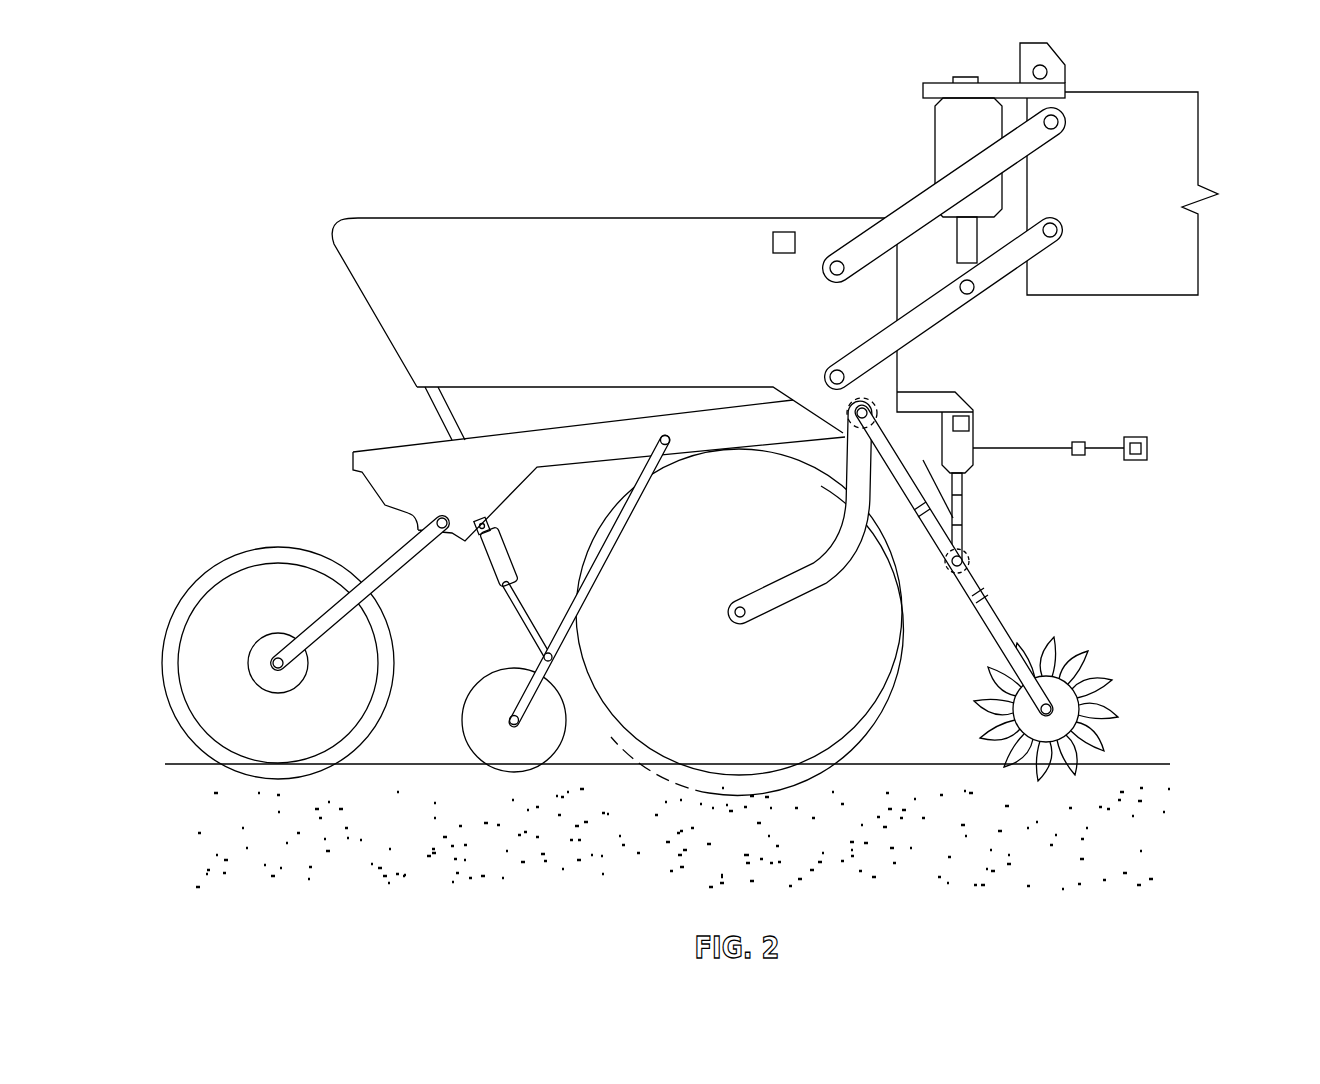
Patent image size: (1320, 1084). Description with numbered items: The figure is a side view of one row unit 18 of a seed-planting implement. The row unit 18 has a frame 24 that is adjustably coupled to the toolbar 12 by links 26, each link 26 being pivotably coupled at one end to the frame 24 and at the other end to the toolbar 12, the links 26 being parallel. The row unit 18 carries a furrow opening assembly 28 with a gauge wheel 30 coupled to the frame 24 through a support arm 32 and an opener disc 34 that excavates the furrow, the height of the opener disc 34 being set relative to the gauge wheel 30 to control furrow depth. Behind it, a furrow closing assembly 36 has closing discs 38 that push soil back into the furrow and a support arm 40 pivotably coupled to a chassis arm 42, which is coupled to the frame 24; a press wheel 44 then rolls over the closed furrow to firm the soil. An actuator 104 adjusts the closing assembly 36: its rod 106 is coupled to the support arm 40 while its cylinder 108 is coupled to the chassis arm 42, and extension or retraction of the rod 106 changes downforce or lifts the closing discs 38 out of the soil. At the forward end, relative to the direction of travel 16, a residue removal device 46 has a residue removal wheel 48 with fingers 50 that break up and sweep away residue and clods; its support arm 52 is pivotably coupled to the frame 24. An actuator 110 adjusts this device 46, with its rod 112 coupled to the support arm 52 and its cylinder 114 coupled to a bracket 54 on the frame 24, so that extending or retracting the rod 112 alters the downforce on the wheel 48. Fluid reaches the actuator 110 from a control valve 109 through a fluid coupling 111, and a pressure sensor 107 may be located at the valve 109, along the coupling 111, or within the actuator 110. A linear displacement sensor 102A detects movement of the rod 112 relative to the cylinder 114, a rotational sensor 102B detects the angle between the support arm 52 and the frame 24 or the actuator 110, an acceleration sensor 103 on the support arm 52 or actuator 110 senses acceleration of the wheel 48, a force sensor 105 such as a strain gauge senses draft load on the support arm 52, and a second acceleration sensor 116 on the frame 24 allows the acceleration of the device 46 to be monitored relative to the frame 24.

The toolbar 12 is at (1090, 296).
The direction of travel 16 is at (1183, 447).
The row unit 18 is at (428, 141).
The frame 24 is at (636, 218).
The links 26 is at (1035, 228).
The furrow opening assembly 28 is at (918, 688).
The gauge wheel 30 is at (686, 671).
The support arm 32 is at (787, 603).
The opener disc 34 is at (672, 786).
The furrow closing assembly 36 is at (440, 715).
The closing discs 38 is at (468, 752).
The support arm 40 is at (572, 643).
The chassis arm 42 is at (388, 452).
The press wheel 44 is at (162, 657).
The residue removal device 46 is at (1013, 548).
The residue removal wheel 48 is at (1068, 721).
The fingers 50 is at (1094, 665).
The support arm 52 is at (992, 614).
The bracket 54 is at (945, 392).
The linear displacement sensor 102A is at (1060, 485).
The rotational sensor 102B is at (878, 400).
The acceleration sensor 103 is at (937, 532).
The actuator 104 is at (511, 543).
The force sensor 105 is at (928, 471).
The rod 106 is at (526, 606).
The pressure sensor 107 is at (970, 417).
The cylinder 108 is at (494, 530).
The control valve 109 is at (1148, 455).
The actuator 110 is at (1024, 498).
The fluid coupling 111 is at (1055, 447).
The rod 112 is at (964, 530).
The cylinder 114 is at (978, 447).
The second acceleration sensor 116 is at (778, 232).